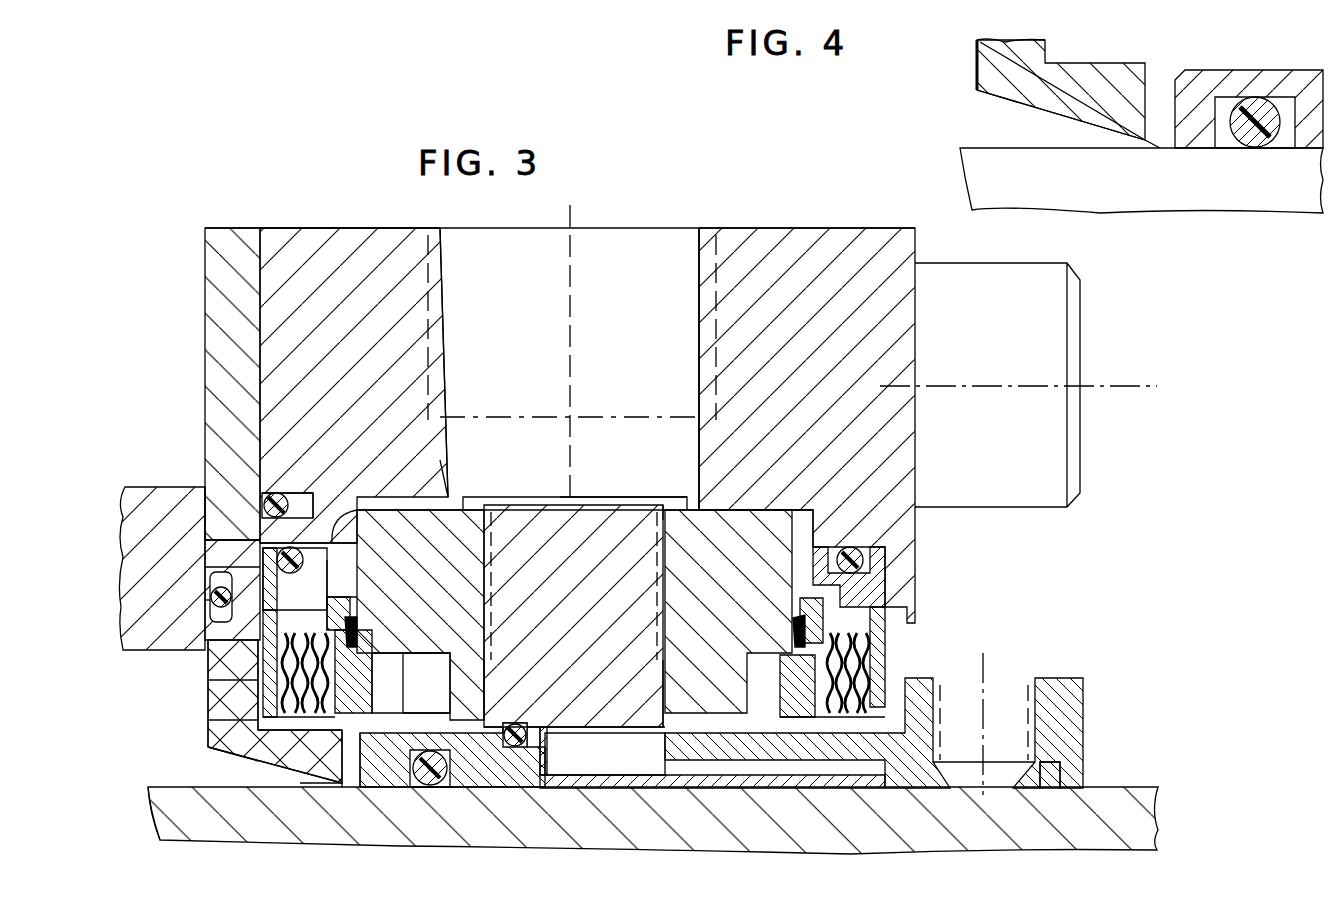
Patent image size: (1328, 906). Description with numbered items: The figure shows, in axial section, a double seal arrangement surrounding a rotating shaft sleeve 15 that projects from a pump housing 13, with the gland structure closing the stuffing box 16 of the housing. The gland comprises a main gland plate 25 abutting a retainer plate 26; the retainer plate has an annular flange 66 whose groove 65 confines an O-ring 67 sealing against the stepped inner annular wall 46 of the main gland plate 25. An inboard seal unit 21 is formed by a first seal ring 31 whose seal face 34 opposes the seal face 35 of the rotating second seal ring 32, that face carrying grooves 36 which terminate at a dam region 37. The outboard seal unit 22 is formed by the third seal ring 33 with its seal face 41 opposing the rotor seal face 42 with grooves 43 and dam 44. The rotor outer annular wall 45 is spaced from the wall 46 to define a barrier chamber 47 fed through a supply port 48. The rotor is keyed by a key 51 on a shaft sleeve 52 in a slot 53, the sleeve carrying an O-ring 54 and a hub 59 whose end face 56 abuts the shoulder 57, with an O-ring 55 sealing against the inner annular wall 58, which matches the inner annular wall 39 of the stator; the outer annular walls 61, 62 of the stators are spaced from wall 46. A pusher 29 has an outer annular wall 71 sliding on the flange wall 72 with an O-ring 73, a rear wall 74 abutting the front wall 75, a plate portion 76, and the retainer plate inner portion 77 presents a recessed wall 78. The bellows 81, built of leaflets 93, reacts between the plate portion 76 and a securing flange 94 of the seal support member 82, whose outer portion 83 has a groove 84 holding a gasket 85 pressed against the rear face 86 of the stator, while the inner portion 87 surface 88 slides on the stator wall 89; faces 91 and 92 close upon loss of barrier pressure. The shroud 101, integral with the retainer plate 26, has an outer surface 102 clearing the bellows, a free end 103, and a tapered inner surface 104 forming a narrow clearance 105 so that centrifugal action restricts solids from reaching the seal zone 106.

In FIG. 3, the housing 13 is at (125, 490).
In FIG. 3, the shaft sleeve 15 is at (155, 787).
In FIG. 4, the shaft sleeve 15 is at (1243, 195).
In FIG. 3, the stuffing box 16 is at (82, 745).
In FIG. 3, the inboard seal unit 21 is at (478, 478).
In FIG. 3, the outboard seal unit 22 is at (690, 490).
In FIG. 3, the main gland plate 25 is at (345, 245).
In FIG. 3, the retainer plate 26 is at (215, 268).
In FIG. 4, the retainer plate 26 is at (1010, 52).
In FIG. 3, the pusher 29 is at (210, 595).
In FIG. 3, the first seal ring 31 is at (452, 602).
In FIG. 3, the second seal ring 32 is at (585, 566).
In FIG. 3, the third seal ring 33 is at (750, 576).
In FIG. 3, the seal face 34 is at (495, 507).
In FIG. 3, the seal face 35 is at (430, 480).
In FIG. 3, the grooves 36 is at (340, 507).
In FIG. 3, the dam region 37 is at (438, 778).
In FIG. 3, the inner annular wall 39 is at (455, 720).
In FIG. 3, the seal face 41 is at (652, 507).
In FIG. 3, the seal face 42 is at (700, 500).
In FIG. 3, the grooves 43 is at (770, 507).
In FIG. 3, the dam 44 is at (680, 760).
In FIG. 3, the outer annular wall 45 is at (610, 507).
In FIG. 3, the stepped inner annular wall 46 is at (840, 507).
In FIG. 3, the annular chamber 47 is at (576, 507).
In FIG. 3, the supply port 48 is at (656, 250).
In FIG. 3, the key 51 is at (660, 720).
In FIG. 3, the shaft sleeve 52 is at (860, 787).
In FIG. 3, the slot 53 is at (555, 735).
In FIG. 3, the O-ring 54 is at (420, 790).
In FIG. 3, the O-ring 55 is at (516, 748).
In FIG. 3, the inner annular end face 56 is at (602, 751).
In FIG. 3, the shoulder 57 is at (545, 725).
In FIG. 3, the inner annular wall 58 is at (515, 720).
In FIG. 3, the hub 59 is at (440, 713).
In FIG. 3, the outer annular wall 61 is at (320, 495).
In FIG. 3, the outer annular wall 62 is at (800, 507).
In FIG. 3, the annular groove 65 is at (300, 425).
In FIG. 3, the annular flange 66 is at (262, 492).
In FIG. 3, the O-ring 67 is at (280, 493).
In FIG. 3, the radially outer annular wall 71 is at (262, 550).
In FIG. 3, the radially inner annular wall 72 is at (300, 500).
In FIG. 3, the O-ring 73 is at (255, 567).
In FIG. 3, the rear wall 74 is at (260, 585).
In FIG. 3, the front wall 75 is at (270, 660).
In FIG. 3, the inner annular plate portion 76 is at (232, 690).
In FIG. 3, the inner annular portion 77 is at (232, 715).
In FIG. 3, the recessed wall 78 is at (262, 688).
In FIG. 3, the bellows 81 is at (300, 722).
In FIG. 3, the seal support member 82 is at (350, 745).
In FIG. 3, the radially outer portion 83 is at (350, 595).
In FIG. 3, the annular groove 84 is at (357, 635).
In FIG. 3, the gasket 85 is at (352, 612).
In FIG. 3, the rear face 86 is at (355, 548).
In FIG. 3, the radially inner annular portion 87 is at (370, 790).
In FIG. 3, the outer annular surface 88 is at (392, 671).
In FIG. 3, the inner annular wall 89 is at (445, 700).
In FIG. 3, the rearwardly-facing annular face 91 is at (340, 568).
In FIG. 3, the annular face 92 is at (295, 578).
In FIG. 3, the bellows plates 93 is at (215, 748).
In FIG. 3, the securing flange 94 is at (270, 770).
In FIG. 3, the shroud 101 is at (255, 760).
In FIG. 4, the shroud 101 is at (1052, 97).
In FIG. 4, the outer surface 102 is at (1090, 65).
In FIG. 4, the free end 103 is at (1150, 78).
In FIG. 3, the inner annular surface 104 is at (155, 805).
In FIG. 4, the inner annular surface 104 is at (1020, 100).
In FIG. 3, the annular clearance 105 is at (322, 800).
In FIG. 4, the annular clearance 105 is at (1150, 145).
In FIG. 3, the annular clearance 106 is at (445, 790).